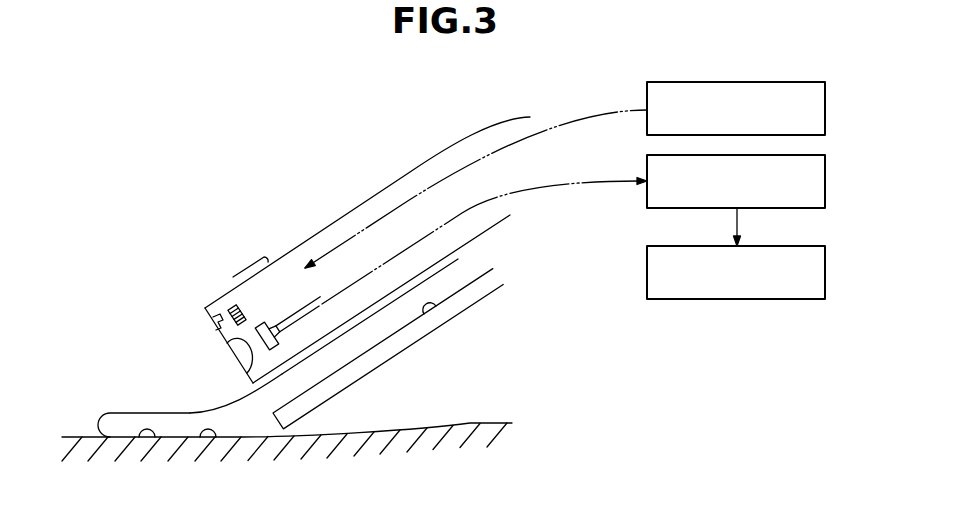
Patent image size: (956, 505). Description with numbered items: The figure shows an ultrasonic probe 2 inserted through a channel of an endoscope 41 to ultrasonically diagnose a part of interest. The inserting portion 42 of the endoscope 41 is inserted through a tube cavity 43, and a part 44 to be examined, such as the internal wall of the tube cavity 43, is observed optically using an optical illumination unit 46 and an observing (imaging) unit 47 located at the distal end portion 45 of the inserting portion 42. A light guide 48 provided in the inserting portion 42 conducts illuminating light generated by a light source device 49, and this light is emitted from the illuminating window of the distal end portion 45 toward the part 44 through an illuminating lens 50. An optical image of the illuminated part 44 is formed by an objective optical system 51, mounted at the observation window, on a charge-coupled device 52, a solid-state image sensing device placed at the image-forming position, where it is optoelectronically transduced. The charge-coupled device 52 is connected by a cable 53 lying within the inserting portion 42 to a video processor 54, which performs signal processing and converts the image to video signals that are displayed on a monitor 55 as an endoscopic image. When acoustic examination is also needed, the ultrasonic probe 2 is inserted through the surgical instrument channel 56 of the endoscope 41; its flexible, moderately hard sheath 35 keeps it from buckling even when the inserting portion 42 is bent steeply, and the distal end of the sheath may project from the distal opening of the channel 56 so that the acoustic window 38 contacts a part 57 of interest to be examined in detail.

The ultrasonic probe 2 is at (507, 267).
The sheath 35 is at (237, 408).
The acoustic window 38 is at (133, 420).
The endoscope 41 is at (459, 124).
The inserting portion 42 is at (394, 170).
The tube cavity 43 is at (473, 423).
The part to be examined 44 is at (207, 440).
The distal end portion 45 is at (233, 277).
The optical illumination unit 46 is at (127, 238).
The observing (imaging) unit 47 is at (127, 311).
The light guide 48 is at (246, 308).
The light source device 49 is at (678, 82).
The illuminating lens 50 is at (218, 320).
The objective optical system 51 is at (238, 352).
The charge-coupled device (CCD) 52 is at (253, 366).
The cable 53 is at (305, 318).
The video processor 54 is at (673, 209).
The monitor 55 is at (673, 300).
The surgical instrument channel 56 is at (440, 308).
The part of interest 57 is at (150, 440).